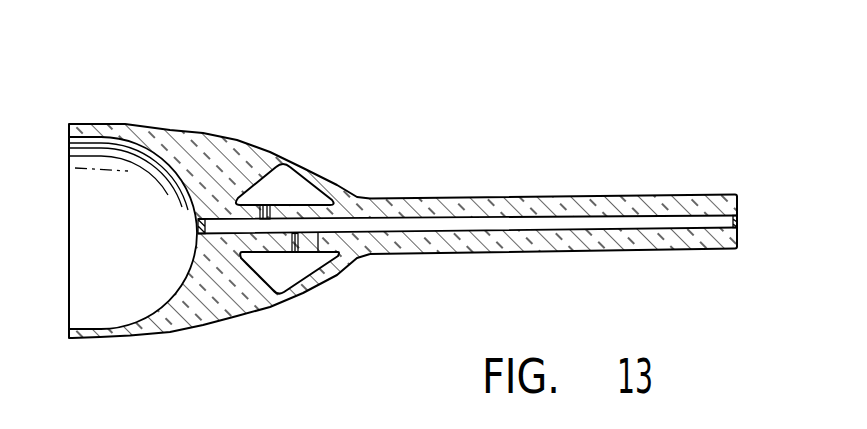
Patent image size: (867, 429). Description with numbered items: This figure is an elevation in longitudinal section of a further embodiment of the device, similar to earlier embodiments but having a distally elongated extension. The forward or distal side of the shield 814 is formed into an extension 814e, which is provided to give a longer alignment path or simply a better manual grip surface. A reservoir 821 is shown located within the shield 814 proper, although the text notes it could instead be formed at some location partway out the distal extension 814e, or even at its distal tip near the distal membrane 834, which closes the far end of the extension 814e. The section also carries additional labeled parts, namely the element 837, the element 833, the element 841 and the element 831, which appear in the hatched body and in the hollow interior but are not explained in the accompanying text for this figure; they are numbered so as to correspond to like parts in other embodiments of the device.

The shield 814 is at (208, 130).
The extension 814e is at (568, 197).
The upper recess 837 is at (303, 190).
The reservoir 821 is at (287, 267).
The lining layers 833 is at (193, 228).
The chamber 841 is at (150, 276).
The channel 831 is at (613, 229).
The distal membrane 834 is at (740, 219).